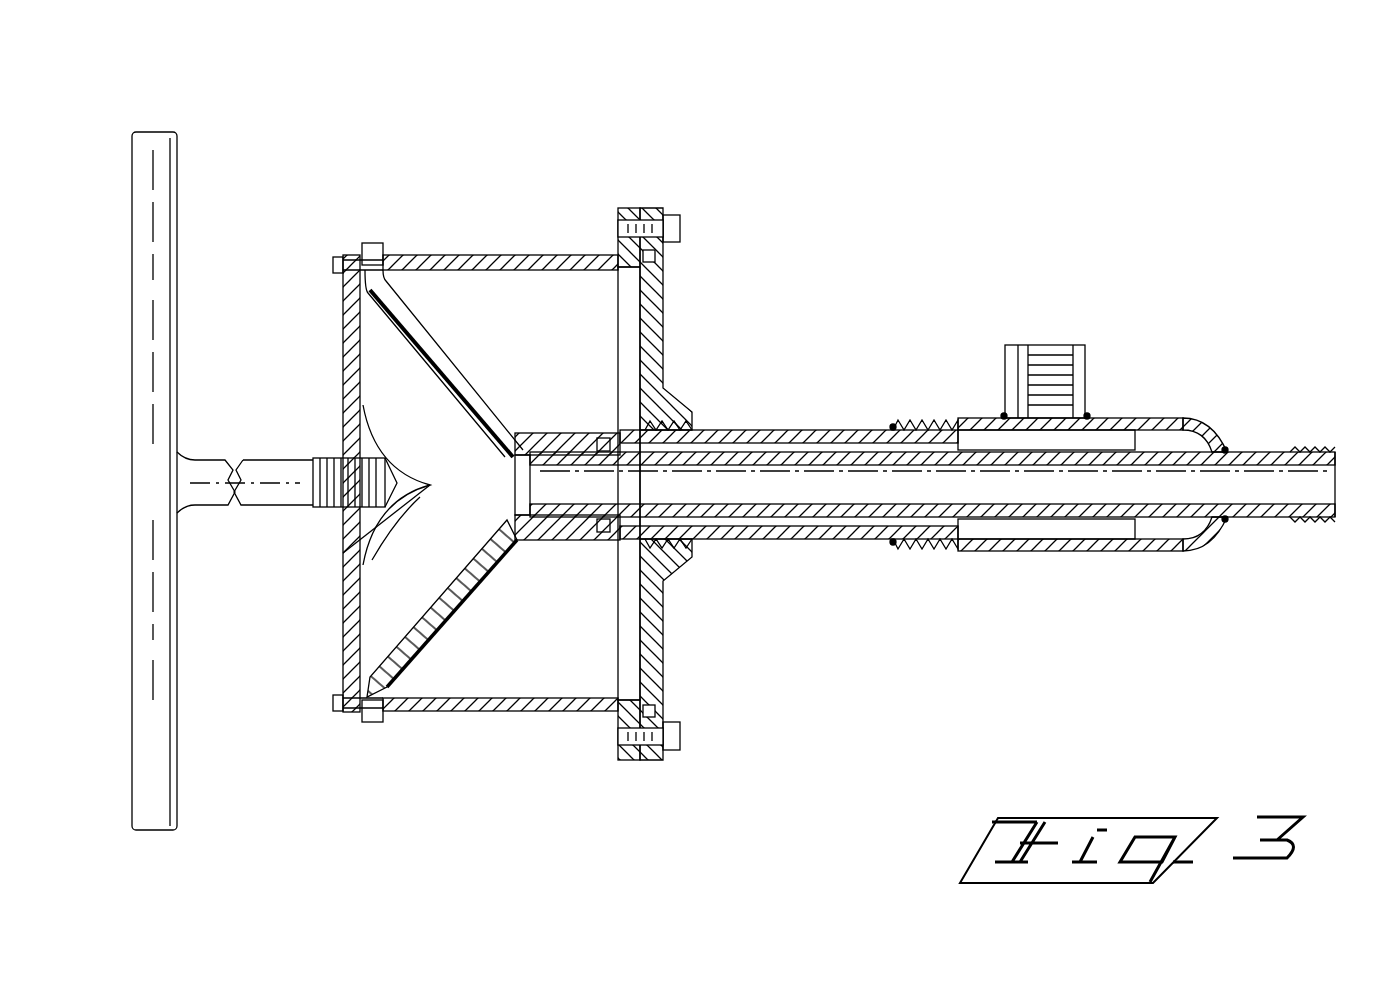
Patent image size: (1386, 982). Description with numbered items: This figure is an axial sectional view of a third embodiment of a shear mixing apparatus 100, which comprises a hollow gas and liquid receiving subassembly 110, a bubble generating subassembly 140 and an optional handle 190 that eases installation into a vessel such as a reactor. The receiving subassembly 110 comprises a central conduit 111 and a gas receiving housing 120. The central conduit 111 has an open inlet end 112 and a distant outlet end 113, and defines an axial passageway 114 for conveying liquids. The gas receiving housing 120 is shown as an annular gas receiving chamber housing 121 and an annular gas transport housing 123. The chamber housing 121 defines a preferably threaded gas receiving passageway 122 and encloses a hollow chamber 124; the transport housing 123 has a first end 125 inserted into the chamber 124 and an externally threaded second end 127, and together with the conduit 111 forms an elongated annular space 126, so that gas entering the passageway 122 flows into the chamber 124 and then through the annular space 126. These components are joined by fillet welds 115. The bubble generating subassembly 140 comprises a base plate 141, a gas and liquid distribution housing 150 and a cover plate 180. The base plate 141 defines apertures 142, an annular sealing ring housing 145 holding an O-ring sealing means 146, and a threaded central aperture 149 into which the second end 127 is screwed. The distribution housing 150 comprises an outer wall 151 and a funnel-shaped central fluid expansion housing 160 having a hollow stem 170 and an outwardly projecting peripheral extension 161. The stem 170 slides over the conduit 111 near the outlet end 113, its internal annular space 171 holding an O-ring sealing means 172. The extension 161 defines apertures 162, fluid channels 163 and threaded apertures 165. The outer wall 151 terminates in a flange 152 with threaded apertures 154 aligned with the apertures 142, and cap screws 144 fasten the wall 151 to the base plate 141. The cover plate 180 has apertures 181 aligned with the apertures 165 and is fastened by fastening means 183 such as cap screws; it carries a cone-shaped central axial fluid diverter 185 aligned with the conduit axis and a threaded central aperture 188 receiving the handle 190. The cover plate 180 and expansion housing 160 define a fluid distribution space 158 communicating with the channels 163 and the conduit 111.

The shear mixing apparatus 100 is at (918, 255).
The gas and liquid receiving subassembly 110 is at (858, 552).
The central conduit 111 is at (1252, 456).
The open inlet end 112 is at (1335, 516).
The outlet end 113 is at (507, 460).
The axial passageway 114 is at (1182, 482).
The fillet welds 115 is at (895, 426).
The gas receiving housing 120 is at (1132, 560).
The annular gas receiving chamber housing 121 is at (1045, 552).
The gas receiving passageway 122 is at (1055, 365).
The annular gas transport housing 123 is at (852, 440).
The hollow chamber 124 is at (1107, 524).
The first end 125 is at (900, 546).
The elongated annular space 126 is at (790, 438).
The second end 127 is at (660, 545).
The bubble generating subassembly 140 is at (338, 554).
The base plate 141 is at (668, 665).
The apertures 142 is at (655, 762).
The cap screws 144 is at (682, 228).
The annular sealing ring housing 145 is at (640, 748).
The sealing means 146 is at (615, 680).
The central aperture 149 is at (685, 518).
The gas and liquid distribution housing 150 is at (470, 246).
The outer wall 151 is at (478, 265).
The flange 152 is at (640, 210).
The apertures 154 is at (652, 248).
The fluid distribution space 158 is at (397, 588).
The central fluid expansion housing 160 is at (467, 367).
The outwardly projecting peripheral extension 161 is at (368, 250).
The apertures 162 is at (417, 657).
The fluid channels 163 is at (355, 708).
The apertures 165 is at (405, 290).
The hollow stem 170 is at (545, 437).
The internal annular space 171 is at (598, 446).
The sealing means 172 is at (570, 552).
The cover plate 180 is at (352, 385).
The apertures 181 is at (368, 250).
The fastening means 183 is at (335, 268).
The central axial fluid diverter 185 is at (412, 520).
The central aperture 188 is at (318, 462).
The handle 190 is at (170, 167).